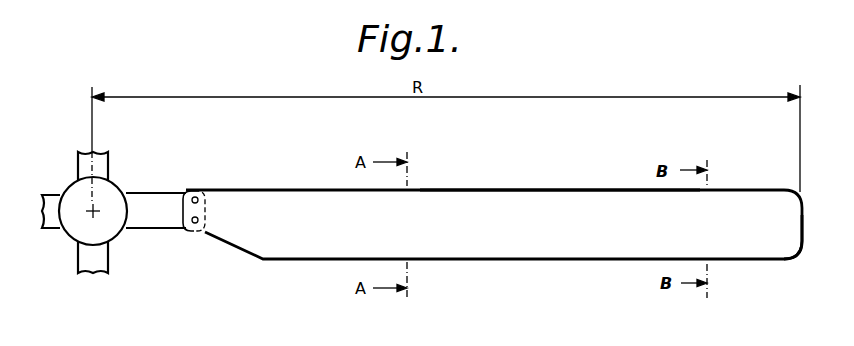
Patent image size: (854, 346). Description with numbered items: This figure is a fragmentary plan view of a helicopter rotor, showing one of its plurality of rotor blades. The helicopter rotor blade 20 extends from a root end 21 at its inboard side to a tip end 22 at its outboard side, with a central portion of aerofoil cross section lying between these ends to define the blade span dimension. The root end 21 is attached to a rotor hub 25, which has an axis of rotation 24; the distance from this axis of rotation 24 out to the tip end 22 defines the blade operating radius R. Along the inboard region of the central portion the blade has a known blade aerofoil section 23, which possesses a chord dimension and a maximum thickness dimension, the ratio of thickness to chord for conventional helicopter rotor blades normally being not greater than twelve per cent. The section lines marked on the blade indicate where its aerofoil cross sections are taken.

The helicopter rotor blade 20 is at (645, 263).
The root end 21 is at (183, 190).
The tip end 22 is at (800, 238).
The blade aerofoil section 23 is at (545, 198).
The axis of rotation 24 is at (88, 214).
The rotor hub 25 is at (158, 215).